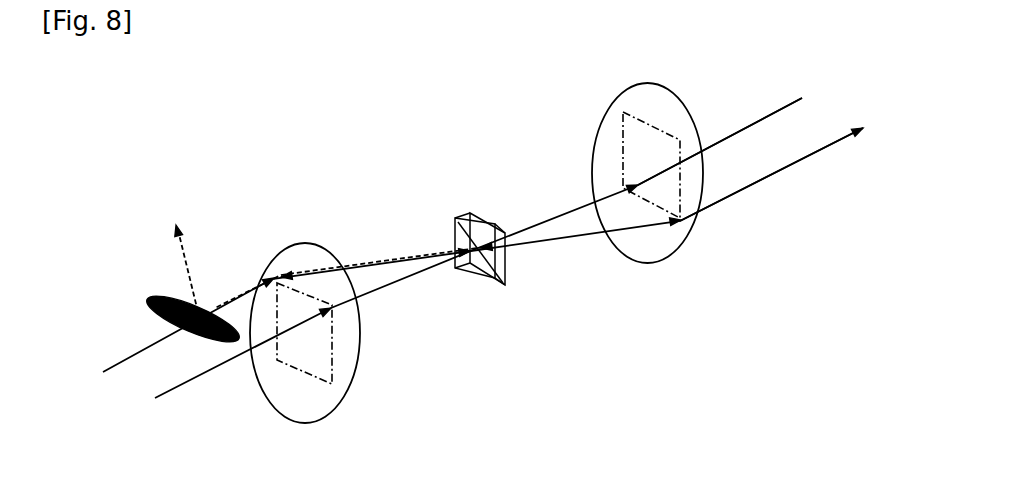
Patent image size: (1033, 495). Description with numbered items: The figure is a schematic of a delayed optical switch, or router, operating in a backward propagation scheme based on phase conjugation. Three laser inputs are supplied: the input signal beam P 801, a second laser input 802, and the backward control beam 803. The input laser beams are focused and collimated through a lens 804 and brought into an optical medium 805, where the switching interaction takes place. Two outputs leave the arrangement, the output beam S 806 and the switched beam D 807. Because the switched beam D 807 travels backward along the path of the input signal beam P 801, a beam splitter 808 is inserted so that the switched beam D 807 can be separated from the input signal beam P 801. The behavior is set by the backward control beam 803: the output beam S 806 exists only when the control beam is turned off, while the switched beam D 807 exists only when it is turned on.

The input signal beam P 801 is at (470, 252).
The laser input 802 is at (487, 254).
The backward control beam C2 803 is at (731, 141).
The lens 804 is at (498, 274).
The optical medium 805 is at (504, 292).
The output beam S 806 is at (771, 174).
The switched beam D 807 is at (342, 248).
The beam splitter 808 is at (165, 269).